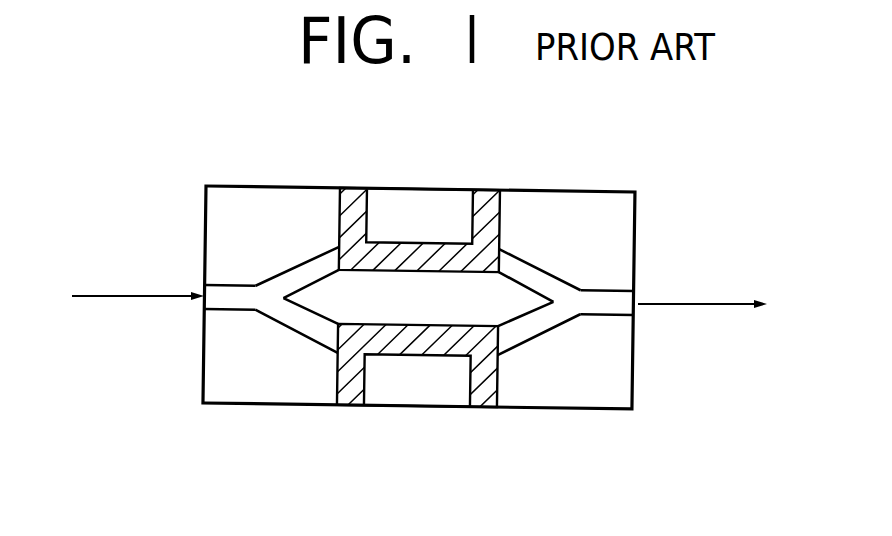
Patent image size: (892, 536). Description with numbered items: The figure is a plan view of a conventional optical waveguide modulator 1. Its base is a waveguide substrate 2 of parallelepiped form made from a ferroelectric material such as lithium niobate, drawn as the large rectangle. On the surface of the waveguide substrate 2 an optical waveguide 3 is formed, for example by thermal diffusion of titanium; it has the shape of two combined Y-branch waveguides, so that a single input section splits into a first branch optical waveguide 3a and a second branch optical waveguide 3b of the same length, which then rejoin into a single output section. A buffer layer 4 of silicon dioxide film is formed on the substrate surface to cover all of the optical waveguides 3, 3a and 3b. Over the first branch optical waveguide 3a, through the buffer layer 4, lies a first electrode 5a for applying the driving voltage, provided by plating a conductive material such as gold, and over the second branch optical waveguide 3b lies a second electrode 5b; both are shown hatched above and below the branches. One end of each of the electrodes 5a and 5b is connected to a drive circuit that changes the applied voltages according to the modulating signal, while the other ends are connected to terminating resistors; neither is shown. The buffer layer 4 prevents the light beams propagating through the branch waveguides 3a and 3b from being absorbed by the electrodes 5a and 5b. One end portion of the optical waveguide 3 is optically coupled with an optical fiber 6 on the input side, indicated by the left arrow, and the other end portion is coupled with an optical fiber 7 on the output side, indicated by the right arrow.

The optical waveguide modulator 1 is at (447, 172).
The waveguide substrate 2 is at (600, 411).
The optical waveguide 3 is at (221, 276).
The first branch optical waveguide 3a is at (281, 273).
The second branch optical waveguide 3b is at (310, 338).
The buffer layer 4 is at (255, 354).
The first electrode 5a is at (392, 243).
The second electrode 5b is at (405, 353).
The optical fiber on the input side 6 is at (101, 295).
The optical fiber on the output side 7 is at (707, 303).